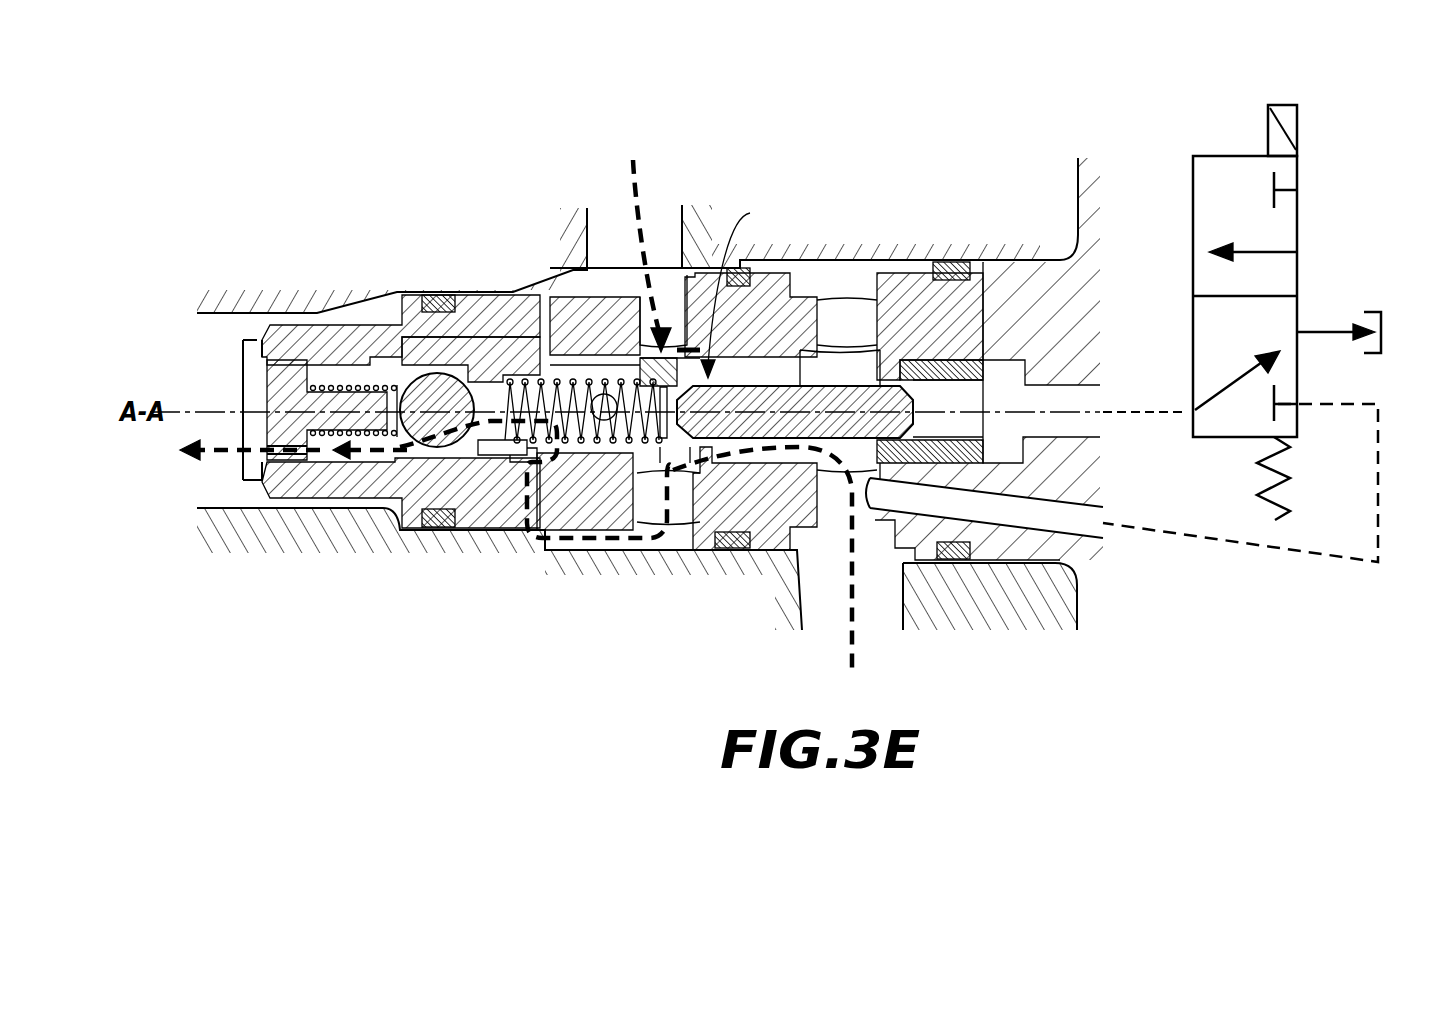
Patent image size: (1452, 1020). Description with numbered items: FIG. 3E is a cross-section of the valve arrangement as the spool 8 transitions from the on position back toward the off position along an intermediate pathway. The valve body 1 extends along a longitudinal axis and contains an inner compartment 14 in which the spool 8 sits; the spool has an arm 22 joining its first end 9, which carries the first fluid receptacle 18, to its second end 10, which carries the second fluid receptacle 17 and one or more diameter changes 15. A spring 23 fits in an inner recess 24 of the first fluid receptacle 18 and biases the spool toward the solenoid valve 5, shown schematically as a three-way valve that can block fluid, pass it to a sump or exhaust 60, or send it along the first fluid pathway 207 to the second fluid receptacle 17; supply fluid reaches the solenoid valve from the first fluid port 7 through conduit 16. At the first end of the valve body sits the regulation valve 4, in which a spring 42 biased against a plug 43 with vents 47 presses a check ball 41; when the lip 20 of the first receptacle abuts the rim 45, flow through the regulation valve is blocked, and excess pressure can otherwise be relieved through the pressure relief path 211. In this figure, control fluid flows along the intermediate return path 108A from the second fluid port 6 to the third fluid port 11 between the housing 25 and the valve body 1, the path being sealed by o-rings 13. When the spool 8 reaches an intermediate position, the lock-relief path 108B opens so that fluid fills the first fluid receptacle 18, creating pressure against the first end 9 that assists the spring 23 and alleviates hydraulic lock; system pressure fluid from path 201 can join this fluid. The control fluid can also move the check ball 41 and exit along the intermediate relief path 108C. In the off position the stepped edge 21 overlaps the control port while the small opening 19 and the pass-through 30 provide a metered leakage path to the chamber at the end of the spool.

The valve body 1 is at (580, 503).
The regulation valve 4 is at (330, 337).
The solenoid valve 5 is at (1303, 250).
The second fluid port 6 is at (674, 307).
The first fluid port 7 is at (862, 510).
The spool 8 is at (812, 390).
The first end of the spool 9 is at (630, 470).
The second end of the spool 10 is at (1065, 470).
The third fluid port 11 is at (520, 507).
The o-rings 13 is at (510, 442).
The inner compartment 14 is at (772, 373).
The diameter changes 15 is at (978, 360).
The conduit 16 is at (1020, 502).
The second fluid receptacle 17 is at (938, 397).
The first fluid receptacle 18 is at (618, 388).
The opening 19 is at (695, 453).
The lip 20 is at (570, 363).
The stepped edge 21 is at (738, 291).
The arm 22 is at (855, 397).
The spring 23 is at (550, 458).
The inner recess 24 is at (668, 427).
The housing 25 is at (383, 513).
The pass-through 30 is at (591, 368).
The check ball 41 is at (398, 388).
The spring 42 is at (323, 387).
The plug 43 is at (282, 392).
The rim 45 is at (546, 368).
The vents 47 is at (273, 455).
The sump or exhaust 60 is at (1382, 315).
The intermediate return path 108A is at (633, 193).
The lock-relief path 108B is at (567, 543).
The intermediate relief path 108C is at (233, 453).
The path 201 is at (878, 600).
The first fluid pathway 207 is at (1067, 432).
The pressure relief path 211 is at (228, 314).